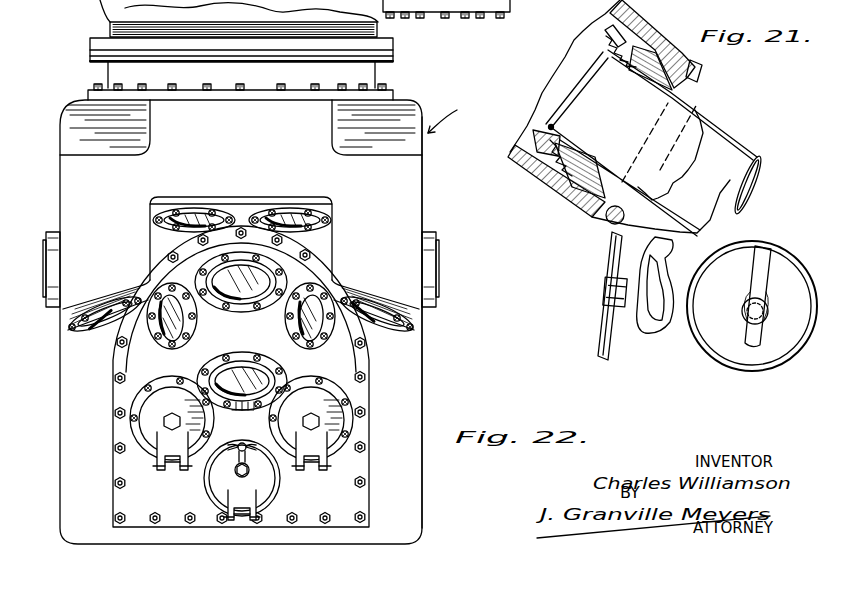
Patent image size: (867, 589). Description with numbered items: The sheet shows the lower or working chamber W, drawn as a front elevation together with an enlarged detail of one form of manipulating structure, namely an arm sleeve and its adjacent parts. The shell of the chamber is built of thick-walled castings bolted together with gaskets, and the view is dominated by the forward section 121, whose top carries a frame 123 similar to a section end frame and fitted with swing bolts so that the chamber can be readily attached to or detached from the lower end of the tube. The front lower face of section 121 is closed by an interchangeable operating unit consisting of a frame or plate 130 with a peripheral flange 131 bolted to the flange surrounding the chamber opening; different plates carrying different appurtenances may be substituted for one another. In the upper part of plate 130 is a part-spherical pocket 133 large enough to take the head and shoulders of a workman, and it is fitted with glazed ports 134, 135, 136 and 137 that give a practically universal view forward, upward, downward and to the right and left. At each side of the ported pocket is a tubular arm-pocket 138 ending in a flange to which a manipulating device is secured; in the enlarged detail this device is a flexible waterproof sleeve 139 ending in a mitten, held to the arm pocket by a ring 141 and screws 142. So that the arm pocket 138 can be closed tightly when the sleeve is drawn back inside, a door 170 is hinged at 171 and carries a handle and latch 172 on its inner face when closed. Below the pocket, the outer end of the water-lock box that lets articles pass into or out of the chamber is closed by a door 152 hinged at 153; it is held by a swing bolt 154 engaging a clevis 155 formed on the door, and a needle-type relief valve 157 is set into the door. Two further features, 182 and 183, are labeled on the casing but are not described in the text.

In FIG. 22, the forward section 121 is at (415, 180).
In FIG. 22, the frame 123 is at (363, 72).
In FIG. 22, the frame or plate 130 is at (345, 478).
In FIG. 22, the peripheral flange 131 is at (115, 508).
In FIG. 22, the part-spherical pocket 133 is at (180, 270).
In FIG. 22, the glazed port 134 is at (242, 378).
In FIG. 22, the glazed port 135 is at (317, 327).
In FIG. 22, the glazed port 136 is at (270, 265).
In FIG. 22, the glazed port 137 is at (168, 324).
In FIG. 22, the arm-pocket 138 is at (143, 362).
In FIG. 21, the arm-pocket 138 is at (536, 183).
In FIG. 21, the sleeve 139 is at (728, 147).
In FIG. 21, the ring 141 is at (688, 62).
In FIG. 21, the screws 142 is at (702, 70).
In FIG. 22, the door 152 is at (262, 482).
In FIG. 22, the hinge connection 153 is at (217, 512).
In FIG. 22, the swing bolt 154 is at (298, 424).
In FIG. 22, the clevis 155 is at (230, 470).
In FIG. 22, the relief valve 157 is at (258, 472).
In FIG. 22, the door 170 is at (152, 430).
In FIG. 21, the door 170 is at (615, 338).
In FIG. 22, the hinge connection 171 is at (155, 467).
In FIG. 21, the hinge connection 171 is at (608, 224).
In FIG. 21, the handle and latch 172 is at (663, 327).
In FIG. 22, the casing top recess 182 is at (241, 176).
In FIG. 22, the casing pad 183 is at (175, 145).
In FIG. 22, the working chamber W is at (451, 121).